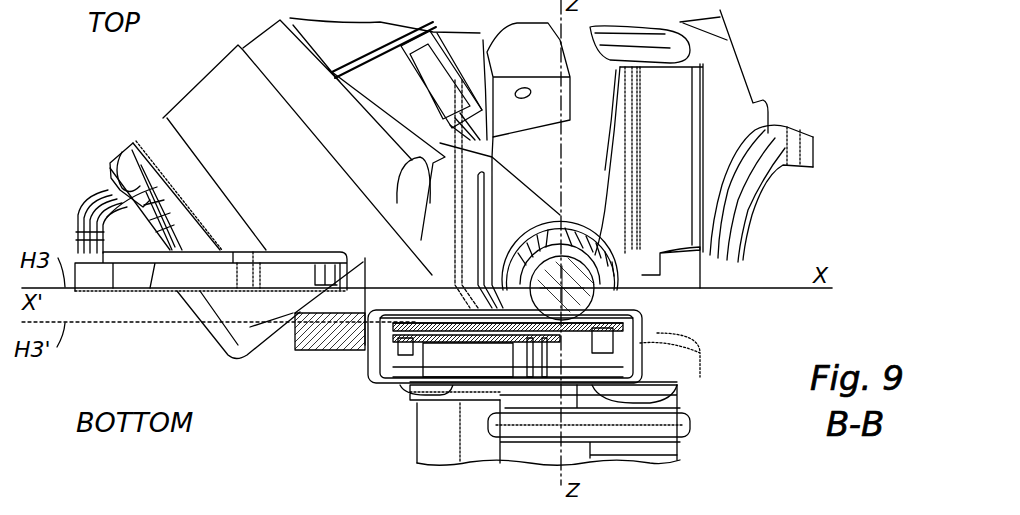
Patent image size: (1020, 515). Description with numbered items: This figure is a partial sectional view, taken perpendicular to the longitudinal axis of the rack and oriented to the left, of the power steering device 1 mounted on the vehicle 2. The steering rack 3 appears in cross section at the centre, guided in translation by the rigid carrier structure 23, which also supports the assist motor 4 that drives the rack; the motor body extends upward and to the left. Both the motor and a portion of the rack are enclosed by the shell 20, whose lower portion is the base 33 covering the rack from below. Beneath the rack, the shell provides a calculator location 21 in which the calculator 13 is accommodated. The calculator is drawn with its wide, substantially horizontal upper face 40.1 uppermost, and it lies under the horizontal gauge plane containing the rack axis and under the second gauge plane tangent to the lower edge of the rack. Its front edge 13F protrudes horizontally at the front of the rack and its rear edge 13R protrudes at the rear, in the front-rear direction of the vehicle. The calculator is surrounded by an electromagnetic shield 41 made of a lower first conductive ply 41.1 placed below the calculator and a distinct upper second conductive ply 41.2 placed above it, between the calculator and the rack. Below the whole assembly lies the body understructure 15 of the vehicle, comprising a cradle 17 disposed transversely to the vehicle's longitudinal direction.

The power steering device 1 is at (837, 82).
The vehicle 2 is at (635, 432).
The body understructure 15 is at (687, 448).
The steering rack 3 is at (572, 295).
The assist motor 4 is at (213, 105).
The calculator 13 is at (443, 350).
The front edge of the calculator 13F is at (620, 338).
The rear edge of the calculator 13R is at (393, 352).
The cradle 17 is at (617, 457).
The shell 20 is at (808, 152).
The calculator location 21 is at (647, 375).
The rigid carrier structure 23 is at (723, 107).
The base 33 is at (690, 303).
The upper face 40.1 is at (462, 313).
The electromagnetic shield 41 is at (508, 320).
The lower first conductive ply 41.1 is at (417, 374).
The upper second conductive ply 41.2 is at (412, 310).